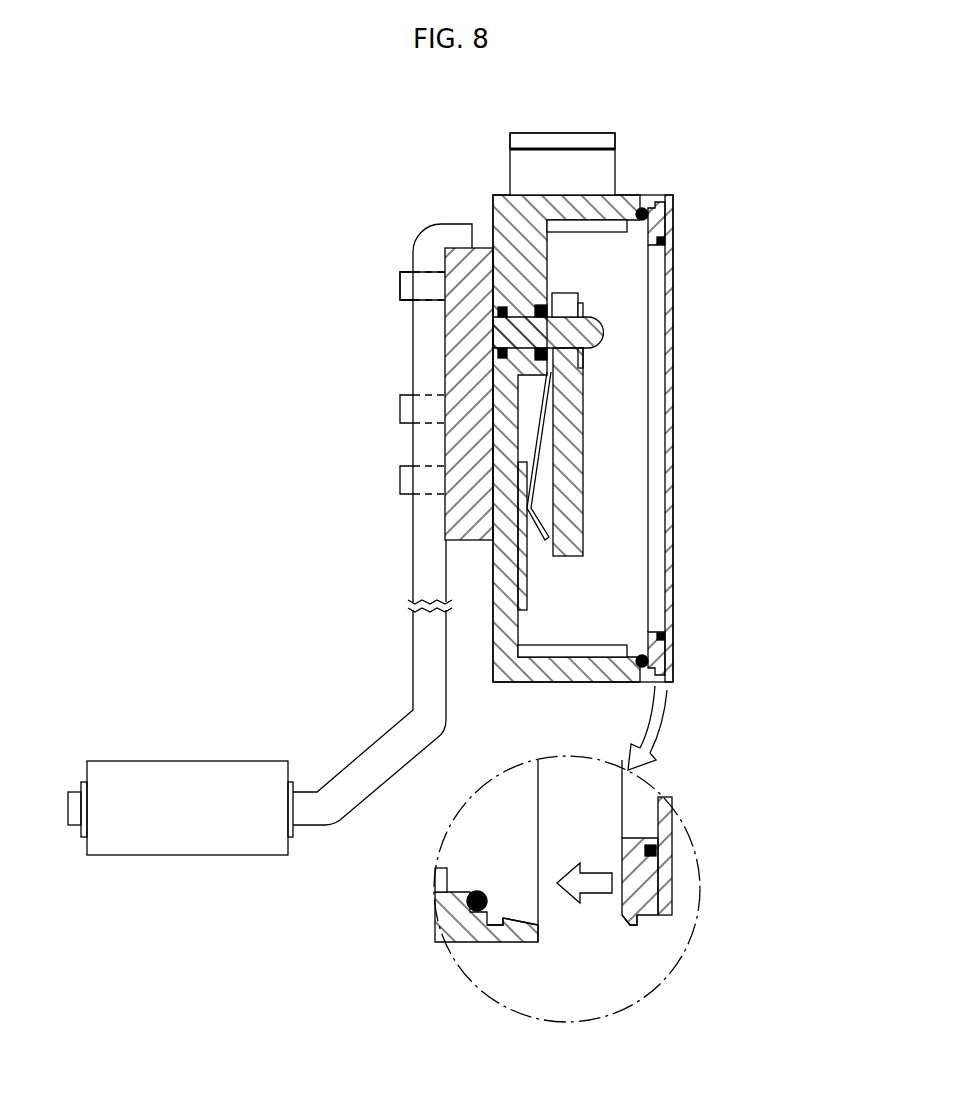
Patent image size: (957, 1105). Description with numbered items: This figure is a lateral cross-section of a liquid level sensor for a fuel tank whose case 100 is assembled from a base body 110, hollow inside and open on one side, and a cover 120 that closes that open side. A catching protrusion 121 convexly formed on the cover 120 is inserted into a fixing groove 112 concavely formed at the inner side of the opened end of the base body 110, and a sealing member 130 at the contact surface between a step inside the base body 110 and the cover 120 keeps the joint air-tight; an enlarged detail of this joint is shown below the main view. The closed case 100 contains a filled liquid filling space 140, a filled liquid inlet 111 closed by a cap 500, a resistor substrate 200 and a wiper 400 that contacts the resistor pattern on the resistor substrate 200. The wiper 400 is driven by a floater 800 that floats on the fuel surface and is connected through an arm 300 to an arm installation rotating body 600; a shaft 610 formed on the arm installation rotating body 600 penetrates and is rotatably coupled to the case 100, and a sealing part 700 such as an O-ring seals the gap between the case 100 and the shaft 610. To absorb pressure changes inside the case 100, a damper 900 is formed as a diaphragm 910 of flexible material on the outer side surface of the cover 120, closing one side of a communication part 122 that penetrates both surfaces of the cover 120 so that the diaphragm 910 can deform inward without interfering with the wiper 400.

The case 100 is at (743, 150).
The base body 110 is at (627, 200).
The filled liquid inlet 111 is at (510, 175).
The fixing groove 112 is at (492, 930).
The cover 120 is at (673, 207).
The catching protrusion 121 is at (630, 927).
The communication part 122 is at (657, 512).
The sealing member 130 is at (440, 905).
The filled liquid filling space 140 is at (637, 380).
The resistor substrate 200 is at (522, 612).
The arm 300 is at (413, 570).
The wiper 400 is at (583, 450).
The cap 500 is at (510, 137).
The arm installation rotating body 600 is at (453, 518).
The shaft 610 is at (602, 333).
The sealing part 700 is at (540, 355).
The floater 800 is at (170, 760).
The damper 900 is at (746, 542).
The diaphragm 910 is at (673, 255).